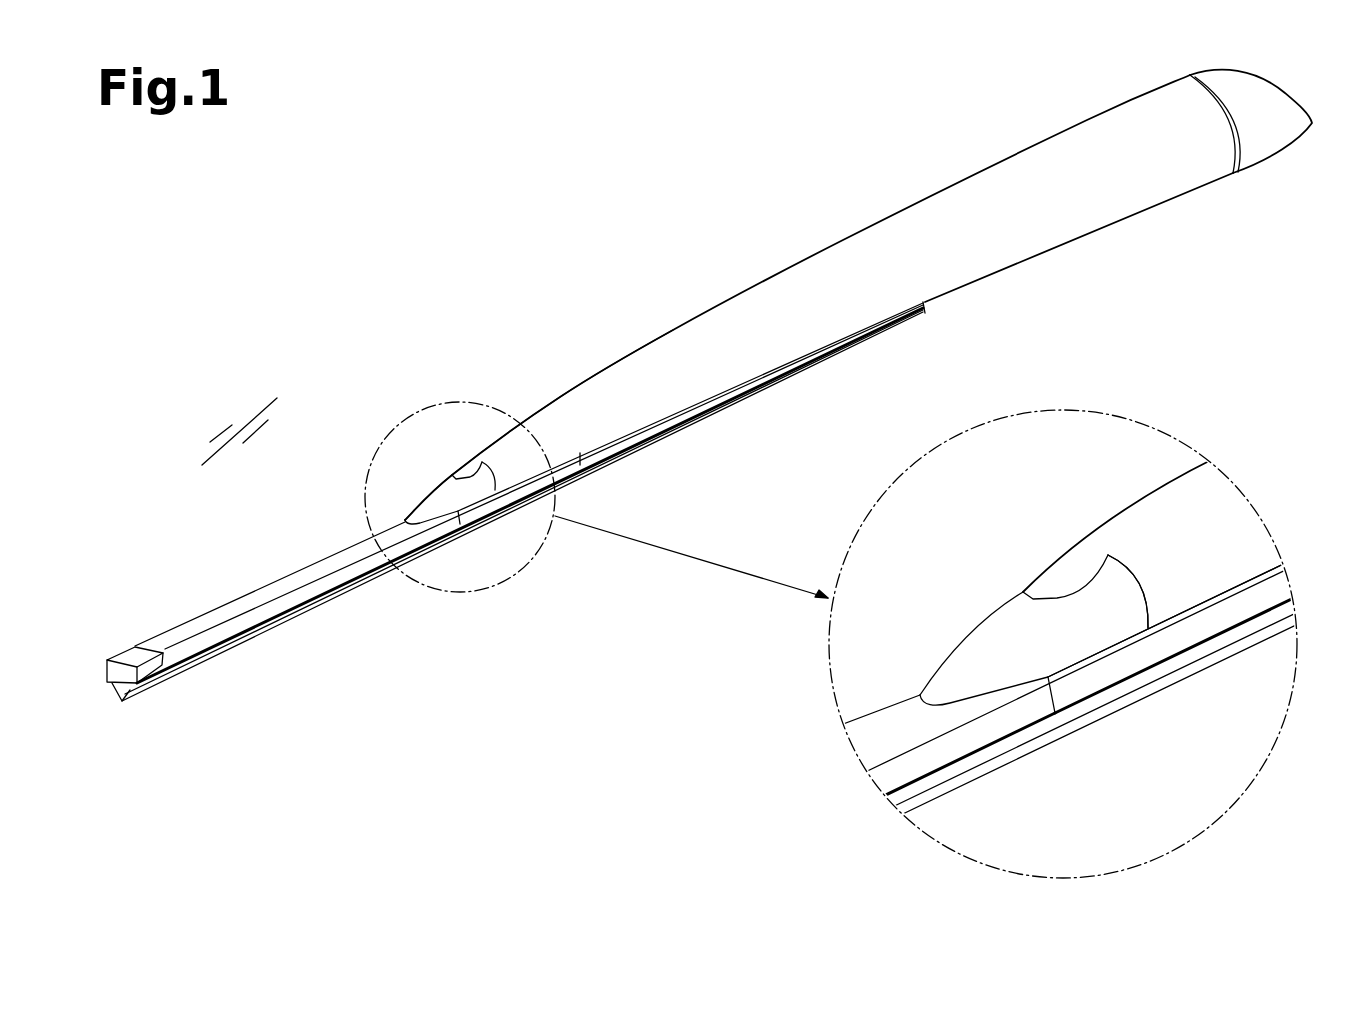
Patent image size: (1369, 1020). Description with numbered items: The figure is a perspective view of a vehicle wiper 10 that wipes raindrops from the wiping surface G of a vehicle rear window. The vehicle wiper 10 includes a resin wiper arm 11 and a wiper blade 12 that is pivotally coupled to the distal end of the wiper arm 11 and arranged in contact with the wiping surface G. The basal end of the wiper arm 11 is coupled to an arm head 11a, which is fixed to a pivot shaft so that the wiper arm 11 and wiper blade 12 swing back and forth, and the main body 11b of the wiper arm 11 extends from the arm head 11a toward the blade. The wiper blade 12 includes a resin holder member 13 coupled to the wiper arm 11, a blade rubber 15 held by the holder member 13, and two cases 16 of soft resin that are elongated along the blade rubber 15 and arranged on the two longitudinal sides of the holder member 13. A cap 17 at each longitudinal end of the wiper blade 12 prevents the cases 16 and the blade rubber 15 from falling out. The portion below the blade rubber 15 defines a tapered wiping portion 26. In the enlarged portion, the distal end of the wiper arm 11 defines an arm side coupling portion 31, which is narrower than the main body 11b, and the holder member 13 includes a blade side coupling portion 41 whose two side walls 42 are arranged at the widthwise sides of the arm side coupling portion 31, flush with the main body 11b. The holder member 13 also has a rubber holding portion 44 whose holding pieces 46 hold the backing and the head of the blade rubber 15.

The vehicle wiper 10 is at (488, 214).
The wiper arm 11 is at (672, 330).
The arm head 11a is at (1280, 66).
The main body of the wiper arm 11b is at (592, 382).
The wiper blade 12 is at (310, 566).
The holder member 13 is at (438, 490).
The blade rubber 15 is at (298, 617).
The cases 16 is at (230, 610).
The cap 17 is at (120, 656).
The wiping portion 26 is at (1048, 744).
The arm side coupling portion 31 is at (1052, 574).
The blade side coupling portion 41 is at (1128, 591).
The side walls 42 is at (1123, 580).
The rubber holding portion 44 is at (1174, 616).
The holding piece 46 is at (1132, 672).
The wiping surface G is at (225, 450).